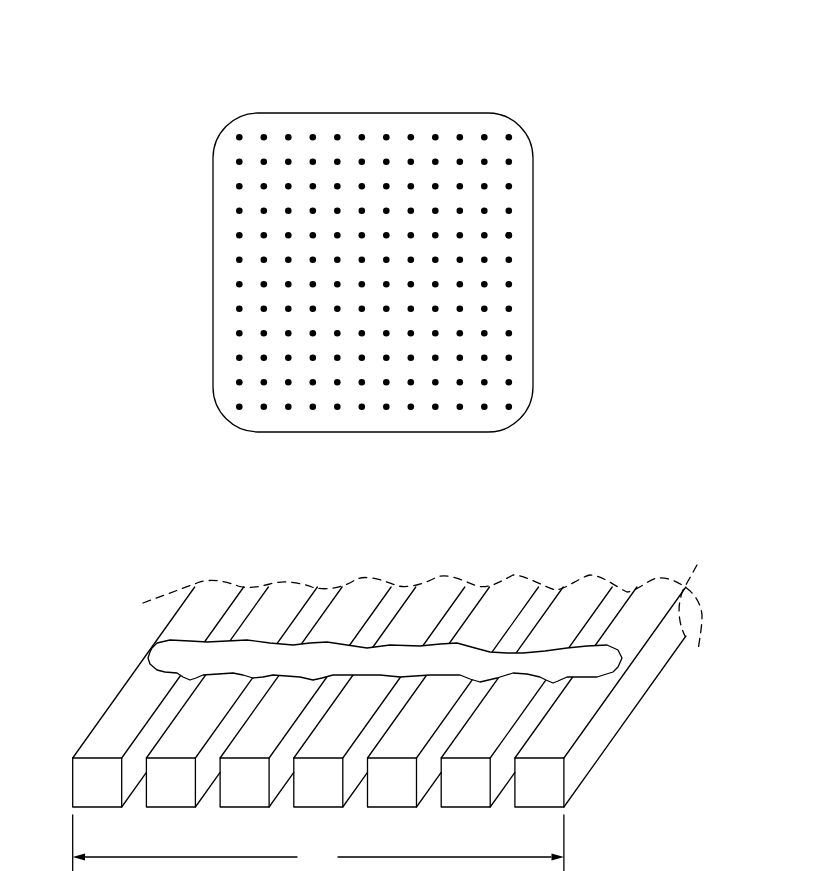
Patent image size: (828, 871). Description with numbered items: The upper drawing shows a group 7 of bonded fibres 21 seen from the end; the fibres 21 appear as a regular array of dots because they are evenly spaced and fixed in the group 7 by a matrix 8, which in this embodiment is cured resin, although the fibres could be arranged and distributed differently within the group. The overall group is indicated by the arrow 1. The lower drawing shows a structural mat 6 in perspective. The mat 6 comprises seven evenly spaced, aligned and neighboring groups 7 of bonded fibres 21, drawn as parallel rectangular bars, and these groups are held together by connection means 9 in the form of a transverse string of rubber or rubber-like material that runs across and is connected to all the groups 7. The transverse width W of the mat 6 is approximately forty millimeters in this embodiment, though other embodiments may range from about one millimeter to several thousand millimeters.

In FIG. 2, the skin patch / wound dressing 1 is at (566, 87).
In FIG. 2, the matrix 8 is at (520, 347).
In FIG. 2, the bonded fibres 21 is at (509, 236).
In FIG. 3, the structural mat 6 is at (161, 542).
In FIG. 3, the group of bonded fibres 7 is at (590, 742).
In FIG. 3, the connection means 9 is at (178, 655).